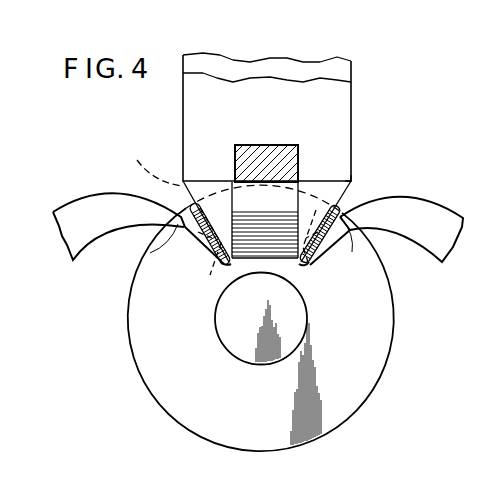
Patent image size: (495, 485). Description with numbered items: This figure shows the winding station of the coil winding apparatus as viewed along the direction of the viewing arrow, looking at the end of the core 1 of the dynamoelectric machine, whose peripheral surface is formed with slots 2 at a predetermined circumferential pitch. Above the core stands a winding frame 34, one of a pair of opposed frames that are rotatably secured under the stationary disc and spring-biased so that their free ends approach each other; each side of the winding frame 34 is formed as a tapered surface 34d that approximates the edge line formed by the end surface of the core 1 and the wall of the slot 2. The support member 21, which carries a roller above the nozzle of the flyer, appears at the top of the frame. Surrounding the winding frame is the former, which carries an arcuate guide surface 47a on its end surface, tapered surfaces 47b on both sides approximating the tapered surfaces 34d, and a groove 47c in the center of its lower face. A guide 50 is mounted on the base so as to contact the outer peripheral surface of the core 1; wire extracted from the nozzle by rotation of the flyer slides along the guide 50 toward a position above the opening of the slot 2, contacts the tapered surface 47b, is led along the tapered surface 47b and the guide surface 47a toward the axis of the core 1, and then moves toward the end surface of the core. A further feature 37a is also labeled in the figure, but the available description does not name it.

The core 1 is at (392, 332).
The slots 2 is at (150, 253).
The support member 21 is at (240, 162).
The winding frames 34 is at (351, 67).
The tapered surface 34d is at (209, 250).
The holder corner edge 37a is at (351, 181).
The arcuate guide surface 47a is at (169, 205).
The tapered surfaces 47b is at (319, 258).
The groove 47c is at (298, 172).
The guide 50 is at (92, 200).